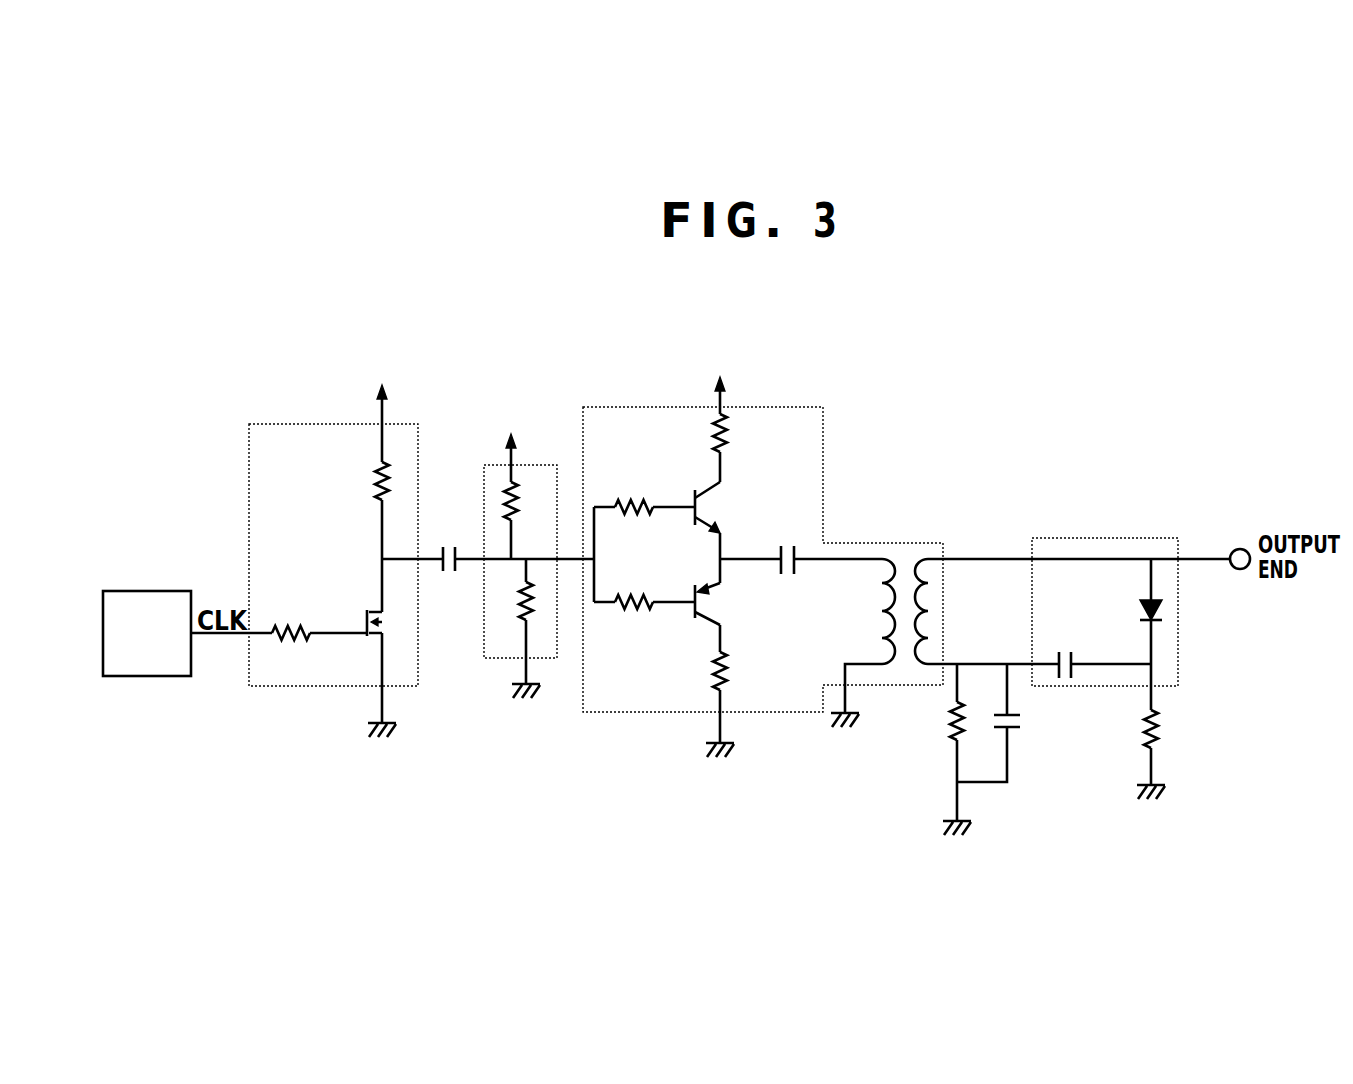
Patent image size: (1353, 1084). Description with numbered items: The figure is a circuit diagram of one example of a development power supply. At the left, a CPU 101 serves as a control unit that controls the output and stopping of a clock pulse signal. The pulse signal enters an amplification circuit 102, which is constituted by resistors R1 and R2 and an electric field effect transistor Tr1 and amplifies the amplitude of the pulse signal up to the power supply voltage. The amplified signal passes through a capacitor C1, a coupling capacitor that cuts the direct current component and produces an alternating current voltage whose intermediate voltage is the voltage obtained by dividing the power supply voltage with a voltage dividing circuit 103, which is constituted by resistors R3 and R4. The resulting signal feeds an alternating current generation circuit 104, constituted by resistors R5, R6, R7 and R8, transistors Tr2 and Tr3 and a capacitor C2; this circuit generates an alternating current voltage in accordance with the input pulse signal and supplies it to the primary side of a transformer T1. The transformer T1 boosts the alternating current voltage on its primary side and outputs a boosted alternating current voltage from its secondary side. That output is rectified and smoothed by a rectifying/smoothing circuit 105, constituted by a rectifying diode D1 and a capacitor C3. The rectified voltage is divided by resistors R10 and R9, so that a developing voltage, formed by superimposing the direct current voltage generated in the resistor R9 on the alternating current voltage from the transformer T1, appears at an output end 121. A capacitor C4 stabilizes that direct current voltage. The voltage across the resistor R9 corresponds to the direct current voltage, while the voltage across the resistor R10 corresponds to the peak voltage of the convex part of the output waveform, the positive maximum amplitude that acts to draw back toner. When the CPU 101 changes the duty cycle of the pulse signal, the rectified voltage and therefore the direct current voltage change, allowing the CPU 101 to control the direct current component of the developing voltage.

The CPU 101 is at (147, 590).
The amplification circuit 102 is at (272, 424).
The voltage dividing circuit 103 is at (542, 464).
The alternating current generation circuit 104 is at (632, 406).
The rectifying/smoothing circuit 105 is at (1059, 537).
The output end 121 is at (1238, 548).
The resistor R1 is at (288, 625).
The resistor R2 is at (374, 476).
The resistor R3 is at (517, 498).
The resistor R4 is at (523, 608).
The resistor R5 is at (633, 504).
The resistor R6 is at (637, 610).
The resistor R7 is at (731, 430).
The resistor R8 is at (731, 658).
The resistor R9 is at (946, 731).
The resistor R10 is at (1164, 727).
The capacitor C1 is at (446, 546).
The capacitor C2 is at (789, 545).
The capacitor C3 is at (1062, 651).
The capacitor C4 is at (1024, 719).
The electric field effect transistor Tr1 is at (359, 606).
The transistor Tr2 is at (712, 500).
The transistor Tr3 is at (715, 604).
The transformer T1 is at (880, 624).
The rectifying diode D1 is at (1164, 612).